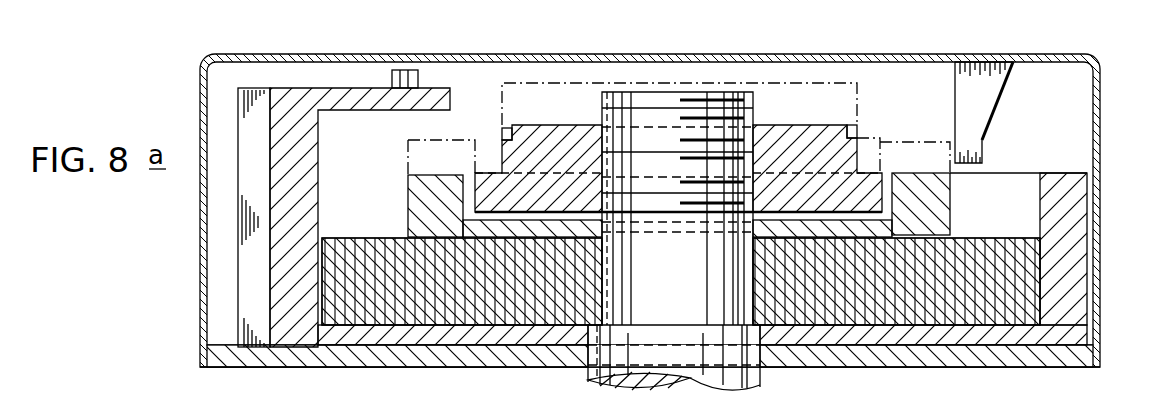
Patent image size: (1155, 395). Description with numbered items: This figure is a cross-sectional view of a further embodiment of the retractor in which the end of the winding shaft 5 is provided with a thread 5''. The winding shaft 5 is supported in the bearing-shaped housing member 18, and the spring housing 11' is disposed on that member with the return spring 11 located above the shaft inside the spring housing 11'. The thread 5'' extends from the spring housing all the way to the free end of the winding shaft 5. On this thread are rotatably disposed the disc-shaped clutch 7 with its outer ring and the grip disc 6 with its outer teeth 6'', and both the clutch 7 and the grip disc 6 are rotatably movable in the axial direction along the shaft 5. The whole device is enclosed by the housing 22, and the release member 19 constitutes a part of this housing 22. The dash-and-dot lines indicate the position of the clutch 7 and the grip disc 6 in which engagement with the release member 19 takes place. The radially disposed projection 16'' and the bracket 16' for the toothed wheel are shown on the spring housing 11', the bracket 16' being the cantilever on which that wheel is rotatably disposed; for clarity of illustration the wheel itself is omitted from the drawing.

The winding shaft 5 is at (706, 215).
The thread 5'' is at (742, 149).
The grip disc 6 is at (679, 147).
The outer teeth 6'' is at (663, 115).
The clutch 7 is at (935, 218).
The return spring 11 is at (726, 281).
The spring housing 11' is at (1089, 249).
The bracket 16' is at (678, 190).
The radially disposed projection 16'' is at (217, 217).
The bearing-shaped housing member 18 is at (592, 358).
The release member 19 is at (985, 108).
The housing 22 is at (1100, 148).